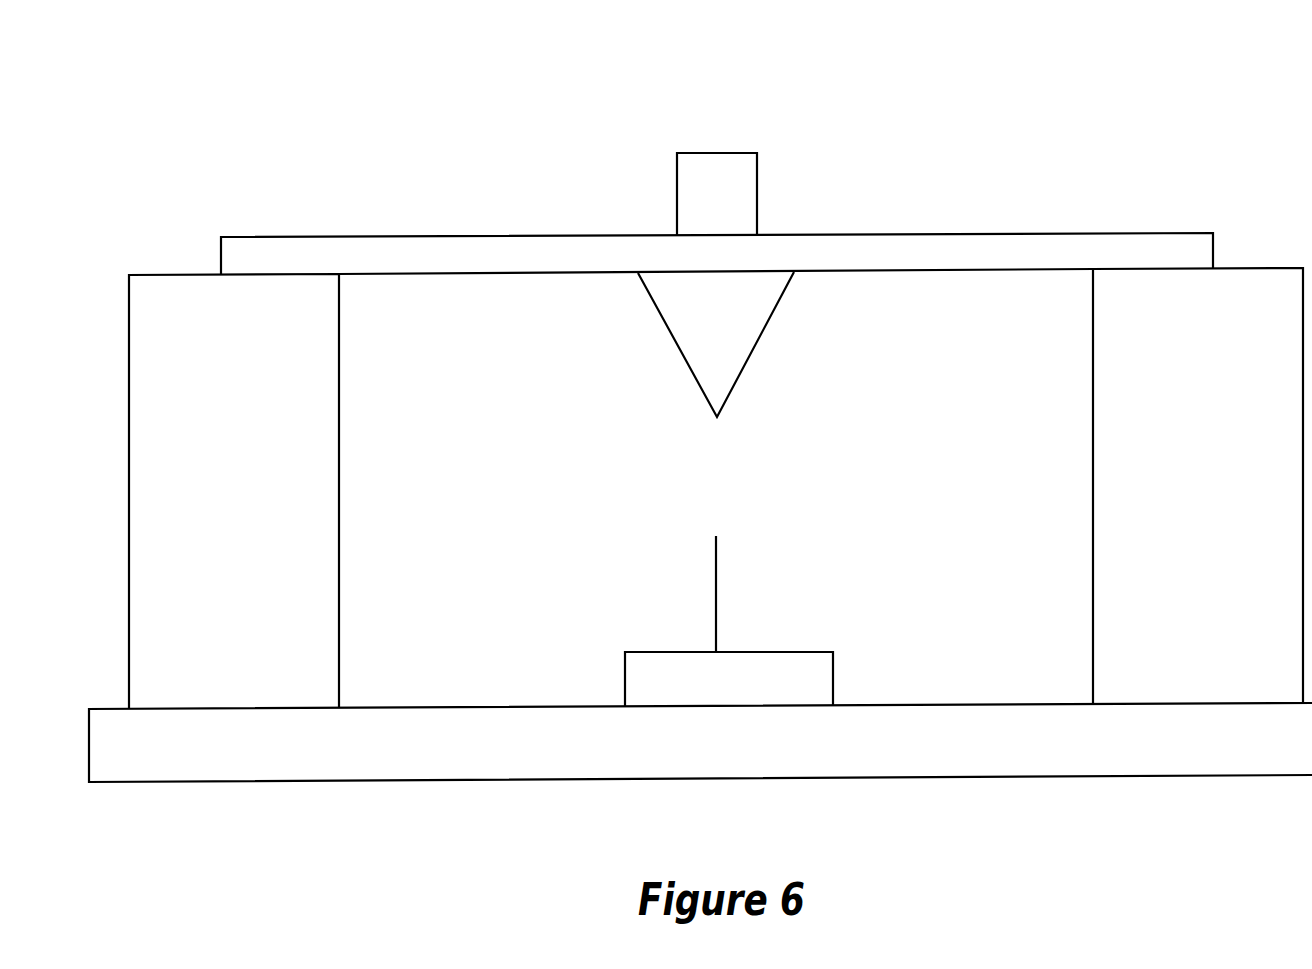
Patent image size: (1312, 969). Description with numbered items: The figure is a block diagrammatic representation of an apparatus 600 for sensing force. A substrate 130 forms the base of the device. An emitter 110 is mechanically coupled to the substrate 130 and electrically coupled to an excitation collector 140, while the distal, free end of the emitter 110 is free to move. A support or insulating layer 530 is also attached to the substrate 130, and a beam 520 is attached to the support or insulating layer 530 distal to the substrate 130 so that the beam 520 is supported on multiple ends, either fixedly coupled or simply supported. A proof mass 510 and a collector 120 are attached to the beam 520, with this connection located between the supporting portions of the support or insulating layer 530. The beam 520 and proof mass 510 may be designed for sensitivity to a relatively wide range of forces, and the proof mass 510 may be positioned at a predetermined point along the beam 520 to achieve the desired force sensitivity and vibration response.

The apparatus 600 is at (178, 140).
The proof mass 510 is at (717, 194).
The beam 520 is at (717, 253).
The support or insulating layer 530 is at (716, 488).
The collector 120 is at (716, 344).
The emitter 110 is at (700, 617).
The excitation collector 140 is at (729, 679).
The substrate 130 is at (700, 742).